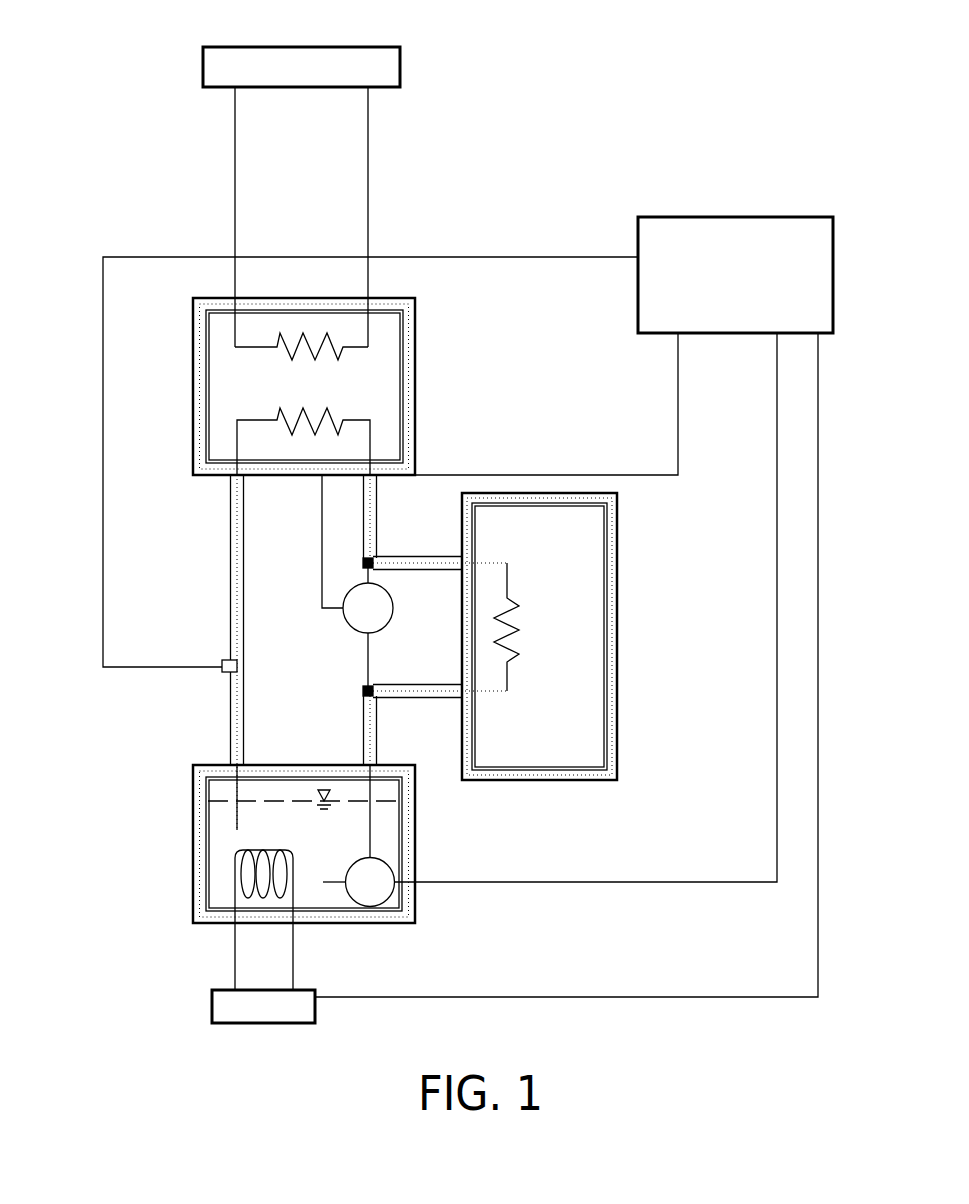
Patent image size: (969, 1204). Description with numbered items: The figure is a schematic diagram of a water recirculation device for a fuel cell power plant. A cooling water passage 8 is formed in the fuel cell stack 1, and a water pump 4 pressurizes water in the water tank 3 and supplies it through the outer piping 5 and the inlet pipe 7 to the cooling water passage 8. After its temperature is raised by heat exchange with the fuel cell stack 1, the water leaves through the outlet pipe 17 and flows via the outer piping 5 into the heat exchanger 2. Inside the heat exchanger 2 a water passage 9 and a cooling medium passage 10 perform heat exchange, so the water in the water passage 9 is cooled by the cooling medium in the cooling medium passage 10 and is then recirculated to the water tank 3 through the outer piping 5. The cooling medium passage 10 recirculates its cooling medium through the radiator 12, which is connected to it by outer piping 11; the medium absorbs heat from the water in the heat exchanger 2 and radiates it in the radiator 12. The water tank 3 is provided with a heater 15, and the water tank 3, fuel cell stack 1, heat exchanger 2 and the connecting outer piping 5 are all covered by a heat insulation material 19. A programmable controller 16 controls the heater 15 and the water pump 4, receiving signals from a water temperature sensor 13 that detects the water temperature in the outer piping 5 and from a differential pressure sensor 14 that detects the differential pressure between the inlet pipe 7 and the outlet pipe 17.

The fuel cell stack 1 is at (597, 652).
The heat exchanger 2 is at (387, 383).
The water tank 3 is at (390, 823).
The water pump 4 is at (390, 863).
The outer piping 5 is at (230, 550).
The inlet pipe 7 is at (430, 700).
The cooling water passage 8 is at (517, 622).
The water passage 9 is at (277, 412).
The cooling medium passage 10 is at (235, 333).
The outer piping 11 is at (369, 181).
The radiator 12 is at (403, 68).
The water temperature sensor 13 is at (218, 677).
The differential pressure sensor 14 is at (345, 621).
The heater 15 is at (235, 857).
The controller 16 is at (715, 214).
The outlet pipe 17 is at (242, 627).
The heat insulation material 19 is at (412, 427).